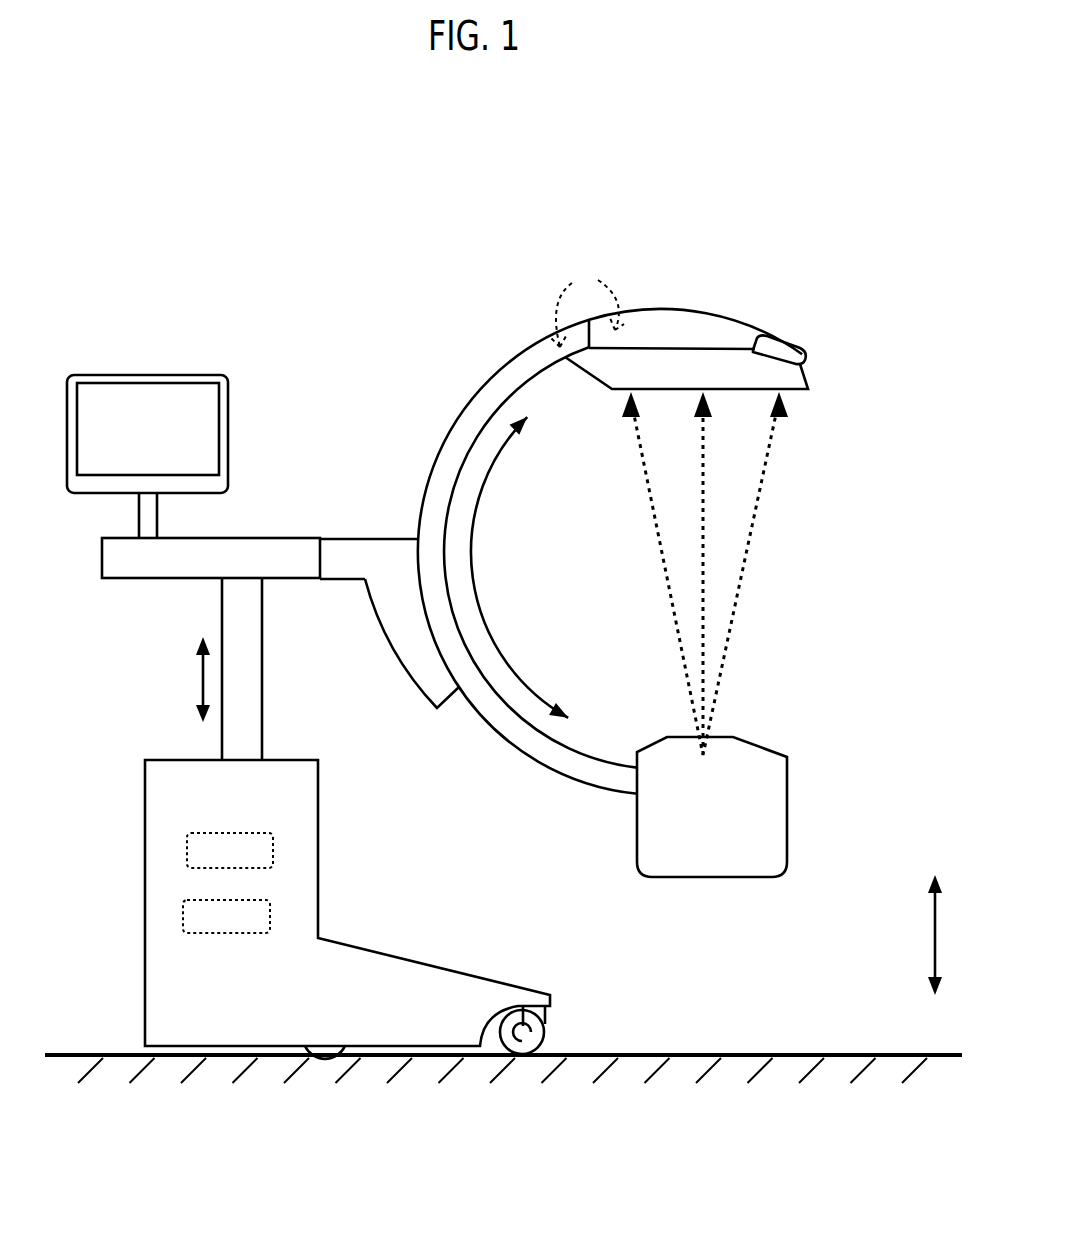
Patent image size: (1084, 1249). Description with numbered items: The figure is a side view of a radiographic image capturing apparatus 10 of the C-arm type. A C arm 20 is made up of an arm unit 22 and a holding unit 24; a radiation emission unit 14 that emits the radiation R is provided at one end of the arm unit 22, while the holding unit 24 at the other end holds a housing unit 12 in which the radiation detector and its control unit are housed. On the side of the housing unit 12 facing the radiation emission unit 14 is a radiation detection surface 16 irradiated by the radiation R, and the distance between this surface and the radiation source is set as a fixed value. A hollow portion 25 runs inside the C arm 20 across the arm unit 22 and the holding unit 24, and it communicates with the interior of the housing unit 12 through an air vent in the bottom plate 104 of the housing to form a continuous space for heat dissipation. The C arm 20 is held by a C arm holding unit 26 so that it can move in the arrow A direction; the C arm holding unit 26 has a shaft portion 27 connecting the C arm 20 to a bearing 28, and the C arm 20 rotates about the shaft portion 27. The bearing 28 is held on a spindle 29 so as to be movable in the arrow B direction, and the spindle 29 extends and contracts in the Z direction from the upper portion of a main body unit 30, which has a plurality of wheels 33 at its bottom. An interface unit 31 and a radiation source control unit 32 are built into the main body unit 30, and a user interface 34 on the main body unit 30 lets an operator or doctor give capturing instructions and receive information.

The radiographic image capturing apparatus 10 is at (833, 163).
The housing unit 12 is at (797, 372).
The radiation emission unit 14 is at (784, 804).
The radiation detection surface 16 is at (805, 404).
The C arm 20 is at (720, 222).
The arm unit 22 is at (517, 357).
The holding unit 24 is at (650, 308).
The hollow portion 25 is at (587, 303).
The C arm holding unit 26 is at (392, 684).
The shaft portion 27 is at (376, 539).
The bearing 28 is at (293, 580).
The spindle 29 is at (222, 620).
The main body unit 30 is at (145, 807).
The interface (I/F) unit 31 is at (187, 853).
The radiation source control unit 32 is at (183, 919).
The wheels 33 is at (547, 1025).
The user interface 34 is at (172, 373).
The bottom plate 104 is at (786, 340).